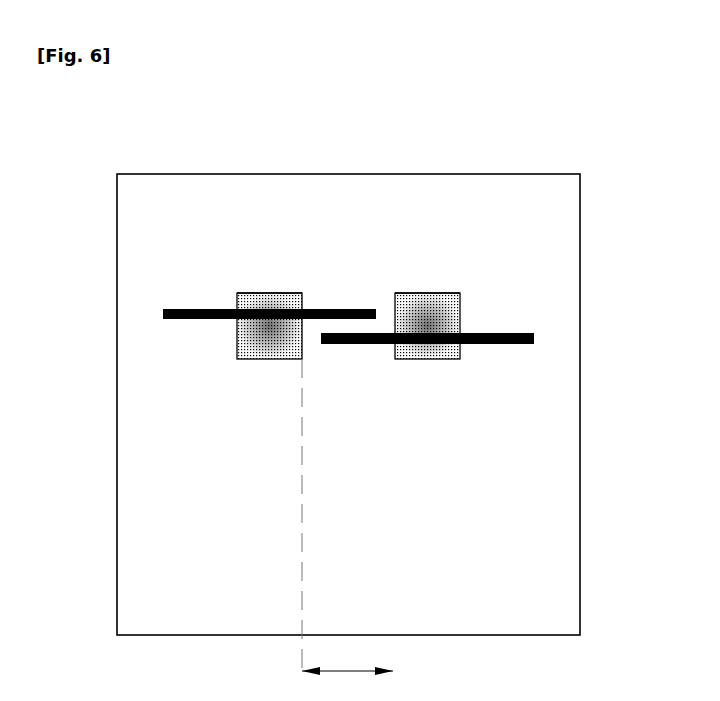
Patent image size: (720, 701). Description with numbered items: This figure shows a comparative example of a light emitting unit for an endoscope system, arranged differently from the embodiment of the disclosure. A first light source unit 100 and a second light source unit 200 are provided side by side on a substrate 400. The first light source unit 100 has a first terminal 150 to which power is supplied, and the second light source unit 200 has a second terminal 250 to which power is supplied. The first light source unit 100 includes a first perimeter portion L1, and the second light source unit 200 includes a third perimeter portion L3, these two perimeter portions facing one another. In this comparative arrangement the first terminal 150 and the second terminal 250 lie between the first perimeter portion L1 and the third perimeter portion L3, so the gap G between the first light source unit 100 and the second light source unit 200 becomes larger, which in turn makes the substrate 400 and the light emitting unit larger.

The substrate 400 is at (534, 174).
The first light source unit 100 is at (239, 293).
The second light source unit 200 is at (460, 293).
The first terminal 150 is at (316, 309).
The second terminal 250 is at (352, 333).
The first perimeter portion L1 is at (303, 293).
The third perimeter portion L3 is at (395, 293).
The gap G is at (347, 530).